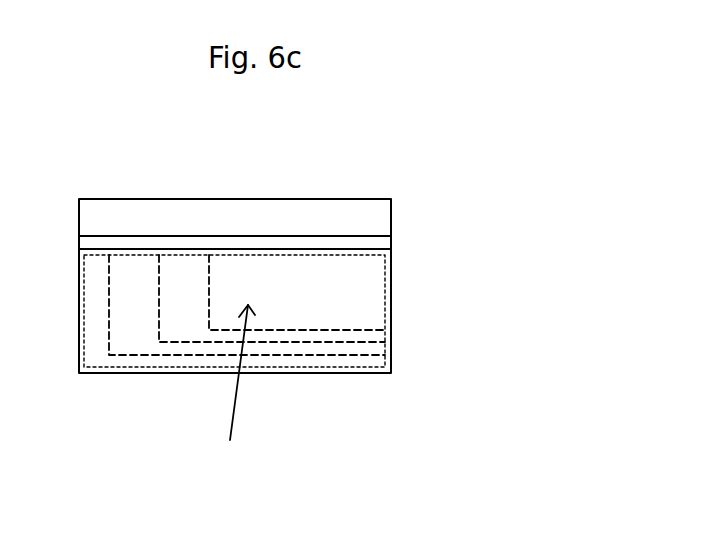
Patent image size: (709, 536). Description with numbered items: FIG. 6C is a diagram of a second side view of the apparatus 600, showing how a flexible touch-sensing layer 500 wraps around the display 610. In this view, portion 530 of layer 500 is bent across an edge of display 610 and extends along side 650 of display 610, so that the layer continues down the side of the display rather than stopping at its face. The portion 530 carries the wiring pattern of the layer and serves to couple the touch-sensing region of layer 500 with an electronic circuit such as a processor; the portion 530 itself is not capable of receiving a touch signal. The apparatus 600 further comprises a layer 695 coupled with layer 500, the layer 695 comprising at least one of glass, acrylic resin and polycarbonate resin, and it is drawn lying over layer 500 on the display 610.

The apparatus 600 is at (453, 162).
The layer 695 is at (393, 215).
The layer 500 is at (393, 243).
The display 610 is at (393, 288).
The portion 530 is at (310, 332).
The side 650 is at (249, 387).